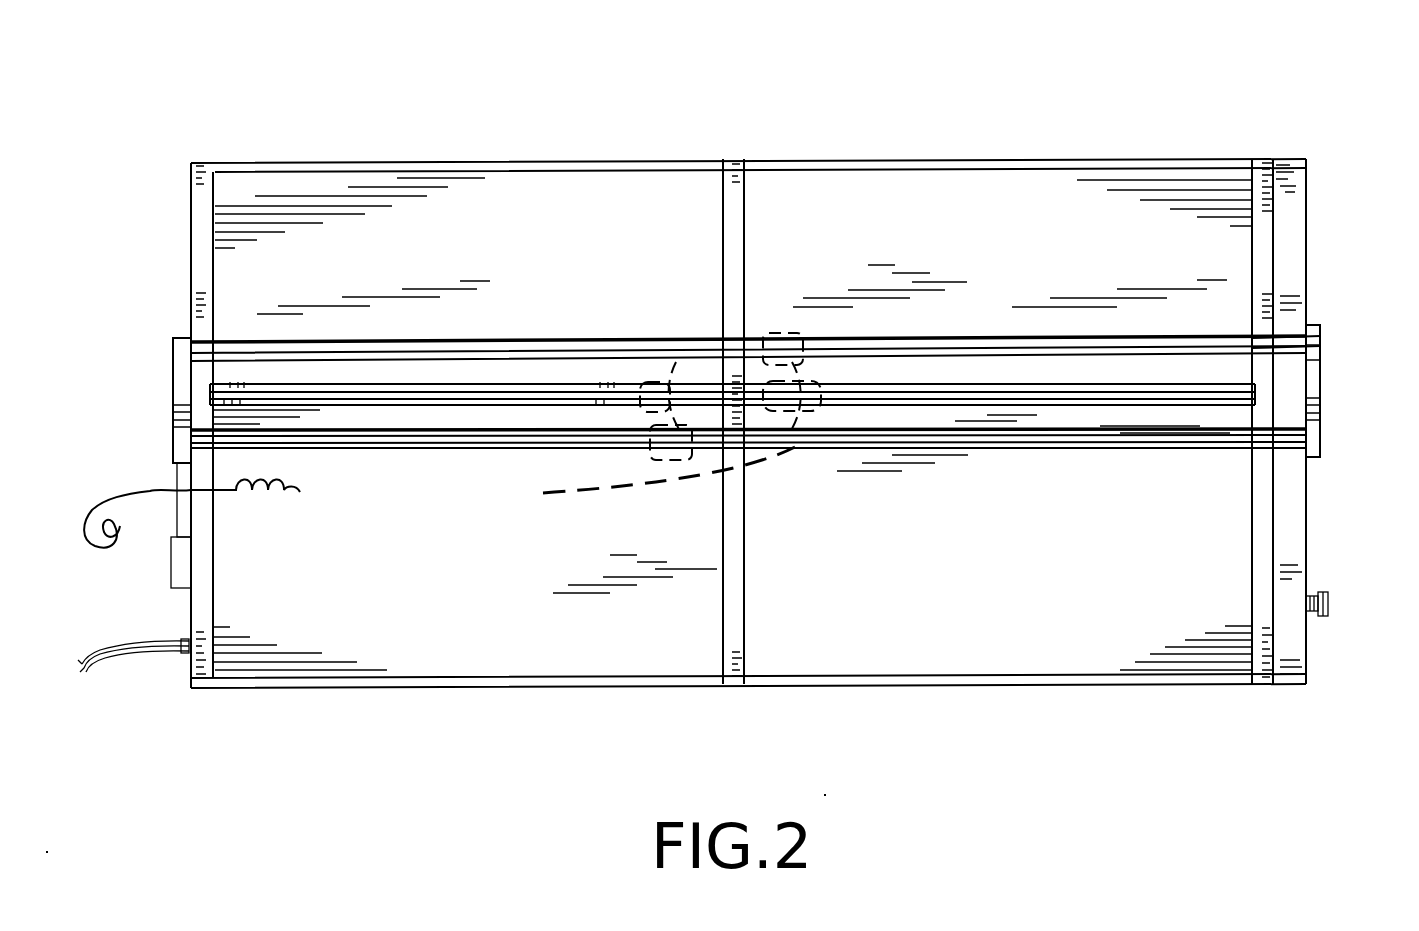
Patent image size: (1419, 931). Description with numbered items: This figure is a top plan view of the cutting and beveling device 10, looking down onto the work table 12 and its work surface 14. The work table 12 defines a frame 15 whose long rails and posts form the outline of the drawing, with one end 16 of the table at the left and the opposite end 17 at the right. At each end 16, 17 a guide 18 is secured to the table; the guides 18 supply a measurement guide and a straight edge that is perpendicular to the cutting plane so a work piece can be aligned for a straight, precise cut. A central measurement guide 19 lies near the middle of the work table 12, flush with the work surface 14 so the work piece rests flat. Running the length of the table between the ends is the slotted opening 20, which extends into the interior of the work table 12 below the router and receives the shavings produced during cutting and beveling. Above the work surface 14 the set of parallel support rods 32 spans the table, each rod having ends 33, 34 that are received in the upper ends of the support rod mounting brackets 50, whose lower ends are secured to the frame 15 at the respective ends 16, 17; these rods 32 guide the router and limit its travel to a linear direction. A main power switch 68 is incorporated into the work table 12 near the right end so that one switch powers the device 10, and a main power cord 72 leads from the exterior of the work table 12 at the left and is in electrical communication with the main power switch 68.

The cutting and beveling device 10 is at (748, 399).
The work table 12 is at (1155, 165).
The work surface 14 is at (992, 238).
The frame 15 is at (557, 680).
The end 16 is at (192, 192).
The end 17 is at (1308, 190).
The guides 18 is at (200, 690).
The central measurement guide 19 is at (735, 690).
The slotted opening 20 is at (345, 385).
The support rods 32 is at (1298, 445).
The end of support rod 33 is at (205, 345).
The end of support rod 34 is at (1285, 345).
The support rod mounting brackets 50 is at (175, 350).
The main power switch 68 is at (1328, 603).
The main power cord 72 is at (155, 650).